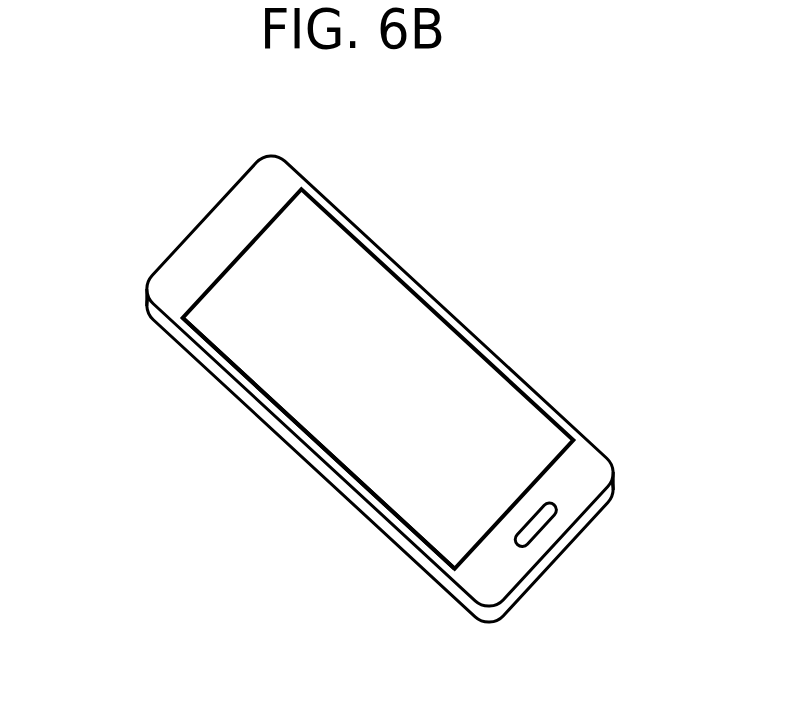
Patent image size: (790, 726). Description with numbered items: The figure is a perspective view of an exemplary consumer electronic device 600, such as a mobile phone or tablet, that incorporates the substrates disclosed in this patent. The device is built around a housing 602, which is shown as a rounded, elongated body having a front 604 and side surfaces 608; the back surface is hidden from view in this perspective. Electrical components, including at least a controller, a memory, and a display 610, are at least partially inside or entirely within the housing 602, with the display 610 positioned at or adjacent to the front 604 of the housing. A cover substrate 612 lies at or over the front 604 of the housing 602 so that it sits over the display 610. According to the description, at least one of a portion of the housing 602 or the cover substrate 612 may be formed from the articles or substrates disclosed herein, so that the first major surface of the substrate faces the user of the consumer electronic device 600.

The consumer electronic device 600 is at (141, 207).
The housing 602 is at (278, 187).
The front surface 604 is at (587, 467).
The side surfaces 608 is at (270, 431).
The display 610 is at (349, 246).
The cover substrate 612 is at (413, 498).